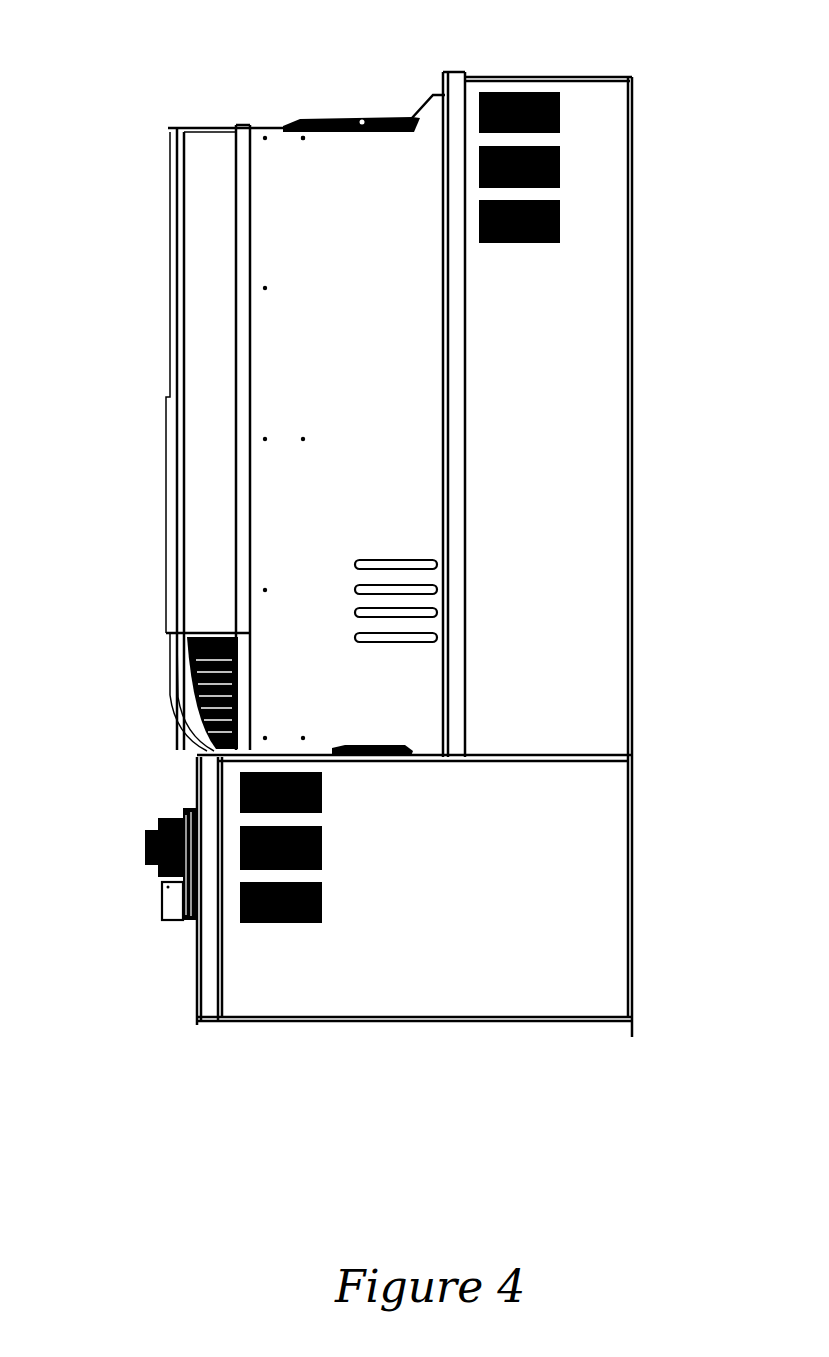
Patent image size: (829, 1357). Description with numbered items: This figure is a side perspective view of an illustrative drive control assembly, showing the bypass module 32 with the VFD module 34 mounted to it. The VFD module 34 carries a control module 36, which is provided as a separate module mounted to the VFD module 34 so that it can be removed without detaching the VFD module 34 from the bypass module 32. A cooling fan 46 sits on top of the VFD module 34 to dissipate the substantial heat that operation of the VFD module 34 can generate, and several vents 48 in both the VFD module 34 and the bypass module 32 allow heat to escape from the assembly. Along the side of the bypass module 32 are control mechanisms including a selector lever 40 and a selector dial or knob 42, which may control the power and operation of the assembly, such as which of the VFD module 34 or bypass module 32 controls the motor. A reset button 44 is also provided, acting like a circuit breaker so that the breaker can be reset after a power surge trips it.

The bypass module 32 is at (605, 522).
The VFD module 34 is at (283, 243).
The control module 36 is at (200, 438).
The selector lever 40 is at (145, 845).
The selector dial or knob 42 is at (167, 902).
The reset button 44 is at (188, 815).
The cooling fan 46 is at (347, 117).
The vents 48 is at (560, 167).